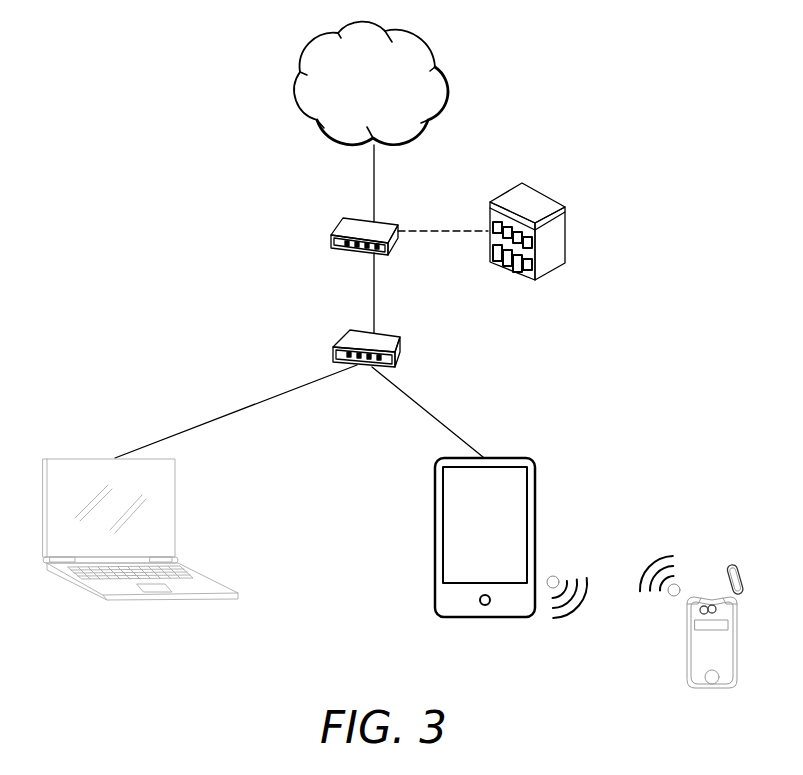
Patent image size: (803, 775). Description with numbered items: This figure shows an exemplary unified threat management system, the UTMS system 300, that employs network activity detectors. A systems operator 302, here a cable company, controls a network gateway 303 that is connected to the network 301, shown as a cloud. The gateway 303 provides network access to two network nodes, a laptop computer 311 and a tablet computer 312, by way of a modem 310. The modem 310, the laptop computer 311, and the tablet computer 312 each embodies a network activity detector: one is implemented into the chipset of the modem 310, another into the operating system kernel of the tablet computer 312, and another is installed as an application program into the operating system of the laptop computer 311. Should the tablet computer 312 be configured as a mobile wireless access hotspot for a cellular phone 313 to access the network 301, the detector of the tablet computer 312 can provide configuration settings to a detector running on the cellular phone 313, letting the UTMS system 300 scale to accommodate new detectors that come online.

The UTMS system 300 is at (660, 60).
The network 301 is at (419, 36).
The systems operator 302 is at (551, 198).
The network gateway 303 is at (328, 238).
The modem 310 is at (398, 338).
The laptop computer 311 is at (70, 458).
The tablet computer 312 is at (520, 458).
The cellular phone 313 is at (732, 567).